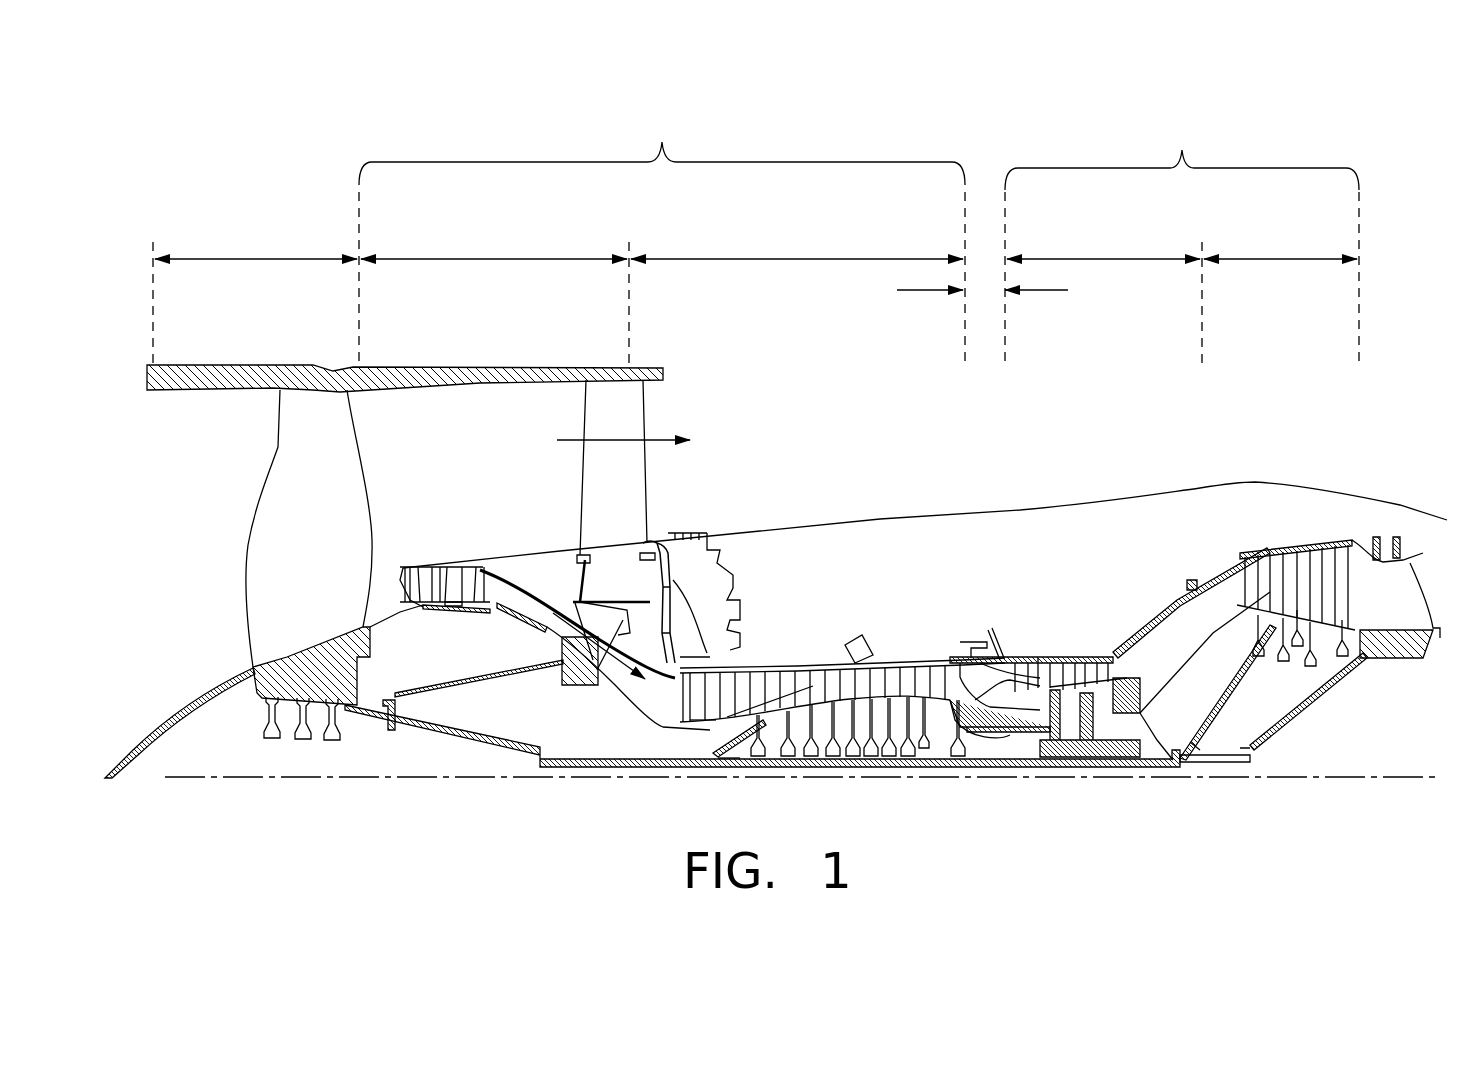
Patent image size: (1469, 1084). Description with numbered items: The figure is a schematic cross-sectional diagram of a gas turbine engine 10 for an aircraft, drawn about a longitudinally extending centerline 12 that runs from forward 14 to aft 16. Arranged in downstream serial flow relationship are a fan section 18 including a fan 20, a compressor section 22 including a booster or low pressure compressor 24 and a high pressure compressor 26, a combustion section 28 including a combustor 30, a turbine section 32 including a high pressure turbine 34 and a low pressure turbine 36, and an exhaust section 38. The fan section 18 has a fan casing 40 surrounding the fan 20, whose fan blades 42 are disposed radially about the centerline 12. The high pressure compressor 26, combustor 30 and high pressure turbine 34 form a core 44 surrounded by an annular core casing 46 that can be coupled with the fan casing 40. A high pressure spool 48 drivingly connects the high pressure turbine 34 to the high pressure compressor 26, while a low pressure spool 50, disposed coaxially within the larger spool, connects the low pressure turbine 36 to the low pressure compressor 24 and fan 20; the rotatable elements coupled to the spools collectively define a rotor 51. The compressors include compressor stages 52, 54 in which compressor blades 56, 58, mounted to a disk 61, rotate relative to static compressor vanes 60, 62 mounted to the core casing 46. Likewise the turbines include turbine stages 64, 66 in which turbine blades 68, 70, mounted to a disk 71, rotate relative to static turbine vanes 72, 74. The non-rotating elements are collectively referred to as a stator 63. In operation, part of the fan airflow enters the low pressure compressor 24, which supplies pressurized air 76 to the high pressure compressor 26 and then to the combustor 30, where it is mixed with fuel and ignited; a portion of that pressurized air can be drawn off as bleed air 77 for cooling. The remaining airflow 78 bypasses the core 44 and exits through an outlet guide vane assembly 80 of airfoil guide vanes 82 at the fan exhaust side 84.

The gas turbine engine 10 is at (1375, 288).
The centerline 12 is at (233, 777).
The forward 14 is at (186, 505).
The aft 16 is at (1461, 600).
The fan section 18 is at (255, 259).
The fan 20 is at (231, 621).
The compressor section 22 is at (662, 142).
The low pressure compressor 24 is at (505, 259).
The high pressure compressor 26 is at (800, 259).
The combustion section 28 is at (903, 290).
The combustor 30 is at (999, 638).
The turbine section 32 is at (1182, 150).
The high pressure turbine 34 is at (1105, 259).
The low pressure turbine 36 is at (1278, 259).
The exhaust section 38 is at (1425, 570).
The fan casing 40 is at (400, 367).
The fan blades 42 is at (327, 437).
The core 44 is at (929, 546).
The core casing 46 is at (1187, 597).
The high pressure spool 48 is at (967, 726).
The low pressure spool 50 is at (560, 773).
The rotor 51 is at (825, 769).
The compressor stages 52 is at (373, 512).
The compressor stages 54 is at (795, 666).
The compressor blades 56 is at (438, 575).
The compressor blades 58 is at (720, 733).
The compressor vanes 60 is at (411, 573).
The disk 61 is at (455, 606).
The compressor vanes 62 is at (707, 735).
The stator 63 is at (703, 725).
The turbine stages 64 is at (1010, 605).
The turbine stages 66 is at (1283, 507).
The turbine blades 68 is at (1062, 657).
The turbine blades 70 is at (1345, 556).
The disk 71 is at (1073, 718).
The turbine vanes 72 is at (1047, 657).
The turbine vanes 74 is at (1326, 556).
The pressurized air 76 is at (596, 676).
The bleed air 77 is at (813, 672).
The airflow 78 is at (568, 440).
The outlet guide vane assembly 80 is at (657, 502).
The airfoil guide vanes 82 is at (590, 477).
The fan exhaust side 84 is at (664, 417).